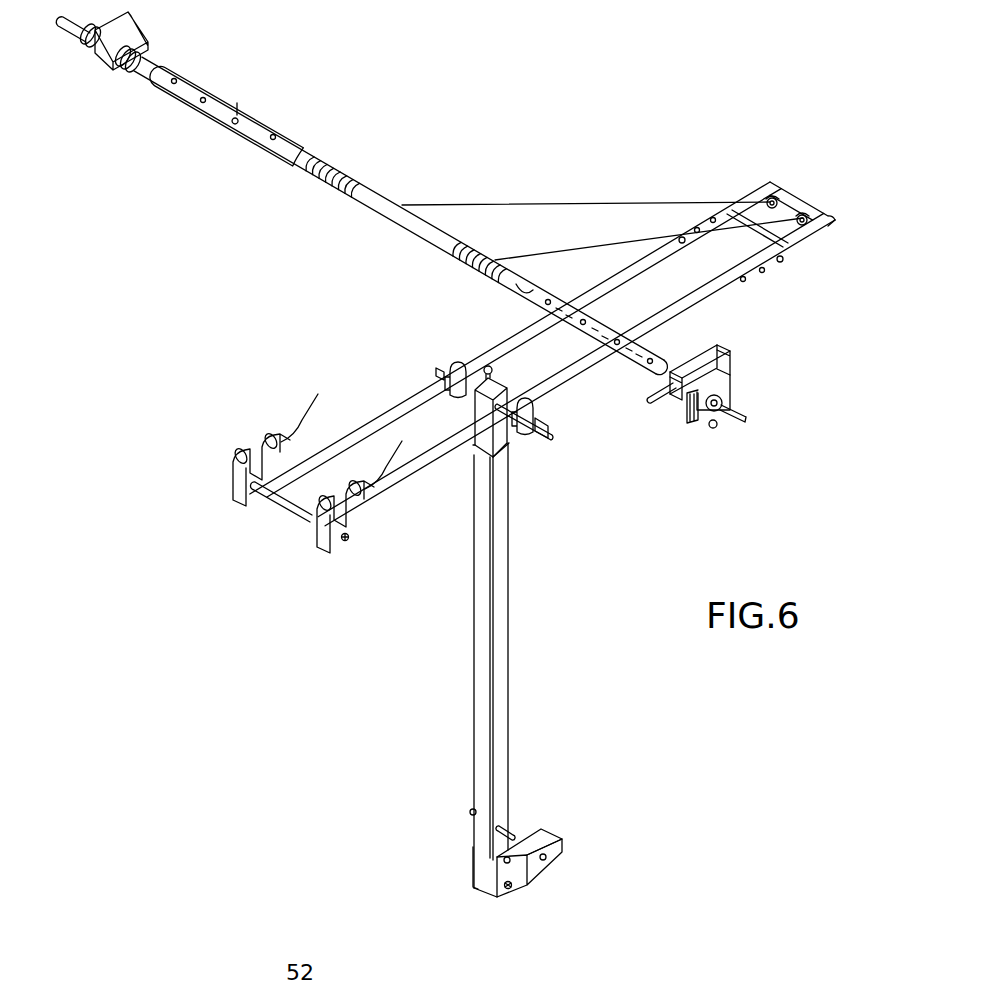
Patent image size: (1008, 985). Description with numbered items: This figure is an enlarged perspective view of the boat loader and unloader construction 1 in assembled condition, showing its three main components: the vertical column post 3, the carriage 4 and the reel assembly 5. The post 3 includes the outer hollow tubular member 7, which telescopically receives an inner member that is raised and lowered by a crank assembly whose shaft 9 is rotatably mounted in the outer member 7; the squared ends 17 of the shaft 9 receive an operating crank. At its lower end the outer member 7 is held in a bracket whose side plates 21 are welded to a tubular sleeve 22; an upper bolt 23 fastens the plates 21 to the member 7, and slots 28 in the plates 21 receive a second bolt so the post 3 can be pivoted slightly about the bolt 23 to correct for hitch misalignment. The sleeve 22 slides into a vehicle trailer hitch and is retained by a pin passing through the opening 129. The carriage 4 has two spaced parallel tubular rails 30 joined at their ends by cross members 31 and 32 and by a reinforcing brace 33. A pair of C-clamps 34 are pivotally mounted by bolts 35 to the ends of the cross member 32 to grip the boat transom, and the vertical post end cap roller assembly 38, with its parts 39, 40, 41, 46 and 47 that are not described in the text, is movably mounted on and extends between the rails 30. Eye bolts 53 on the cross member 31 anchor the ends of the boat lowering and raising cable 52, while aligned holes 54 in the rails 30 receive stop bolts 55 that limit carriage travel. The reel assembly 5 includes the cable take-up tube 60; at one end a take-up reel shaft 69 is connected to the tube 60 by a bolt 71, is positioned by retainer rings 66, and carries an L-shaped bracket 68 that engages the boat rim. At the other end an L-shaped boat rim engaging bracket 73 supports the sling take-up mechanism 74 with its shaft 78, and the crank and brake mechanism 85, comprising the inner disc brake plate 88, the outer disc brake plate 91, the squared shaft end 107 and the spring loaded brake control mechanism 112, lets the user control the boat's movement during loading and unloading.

The boat loader and unloader construction 1 is at (712, 172).
The vertical column post 3 is at (518, 586).
The carriage 4 is at (400, 390).
The reel assembly 5 is at (377, 178).
The outer hollow tubular member 7 is at (480, 677).
The shaft 9 is at (469, 810).
The ends of crankshaft 17 is at (512, 832).
The side plates 21 is at (521, 873).
The tubular sleeve 22 is at (536, 832).
The upper bolt 23 is at (504, 860).
The slots 28 is at (509, 888).
The tubular rails 30 is at (512, 338).
The cross member 31 is at (790, 204).
The cross member 32 is at (283, 500).
The reinforcing brace 33 is at (768, 237).
The C-clamps 34 is at (238, 505).
The bolts 35 is at (348, 537).
The vertical post end cap roller assembly 38 is at (512, 373).
The block 39 is at (481, 414).
The bushing 40 is at (537, 440).
The rod 41 is at (505, 400).
The nut 46 is at (452, 388).
The clamp 47 is at (455, 362).
The boat lowering and raising cable 52 is at (606, 203).
The eye bolts 53 is at (806, 216).
The aligned holes 54 is at (682, 245).
The stop bolts 55 is at (782, 262).
The cable take-up tube 60 is at (420, 232).
The retainer rings 66 is at (142, 50).
The L-shaped bracket 68 is at (118, 52).
The take-up reel shaft 69 is at (152, 74).
The bolt 71 is at (176, 80).
The L-shaped boat rim engaging bracket 73 is at (690, 360).
The sling take-up mechanism 74 is at (740, 356).
The shaft 78 is at (718, 347).
The crank and brake mechanism 85 is at (738, 387).
The inner disc brake plate 88 is at (686, 404).
The outer disc brake plate 91 is at (706, 418).
The squared outer end of shaft 107 is at (746, 415).
The spring loaded brake control mechanism 112 is at (714, 434).
The opening 129 is at (550, 858).